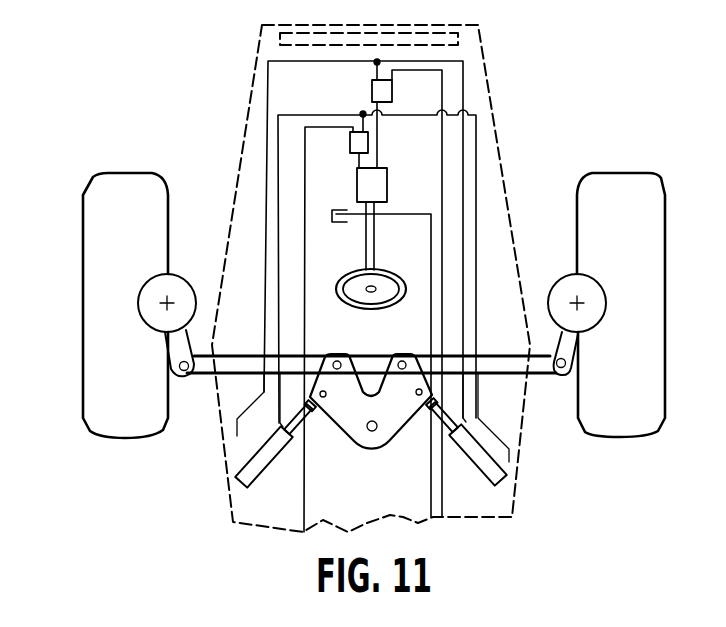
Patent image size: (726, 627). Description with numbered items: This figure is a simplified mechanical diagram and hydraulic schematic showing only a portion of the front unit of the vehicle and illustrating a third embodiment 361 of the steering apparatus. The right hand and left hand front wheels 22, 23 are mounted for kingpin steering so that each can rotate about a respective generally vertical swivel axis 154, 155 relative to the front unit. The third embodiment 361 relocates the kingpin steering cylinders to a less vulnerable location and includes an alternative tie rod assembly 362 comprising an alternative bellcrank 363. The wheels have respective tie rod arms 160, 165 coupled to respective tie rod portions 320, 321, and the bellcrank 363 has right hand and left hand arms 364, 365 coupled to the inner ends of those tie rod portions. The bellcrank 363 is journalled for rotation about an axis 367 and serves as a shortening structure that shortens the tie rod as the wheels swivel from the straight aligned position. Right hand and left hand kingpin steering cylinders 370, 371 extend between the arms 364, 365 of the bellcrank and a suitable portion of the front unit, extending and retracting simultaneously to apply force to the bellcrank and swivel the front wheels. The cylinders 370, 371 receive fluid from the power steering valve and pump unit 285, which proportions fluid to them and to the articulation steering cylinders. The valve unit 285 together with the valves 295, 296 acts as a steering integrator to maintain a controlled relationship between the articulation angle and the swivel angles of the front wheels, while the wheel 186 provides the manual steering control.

The right hand front wheel 22 is at (613, 418).
The left hand front wheel 23 is at (125, 427).
The swivel axis 154 is at (576, 303).
The swivel axis 155 is at (167, 300).
The tie rod arm 160 is at (576, 345).
The tie rod arm 165 is at (166, 352).
The wheel 186 is at (347, 277).
The valve unit 285 is at (376, 183).
The valve 295 is at (372, 90).
The valve 296 is at (350, 143).
The tie rod portion 320 is at (499, 365).
The tie rod portion 321 is at (236, 356).
The third embodiment 361 is at (194, 502).
The alternative tie rod assembly 362 is at (369, 39).
The alternative bellcrank 363 is at (351, 405).
The right hand arm 364 is at (390, 357).
The left hand arm 365 is at (360, 357).
The axis 367 is at (377, 429).
The right hand kingpin steering cylinder 370 is at (479, 456).
The left hand kingpin steering cylinder 371 is at (262, 455).